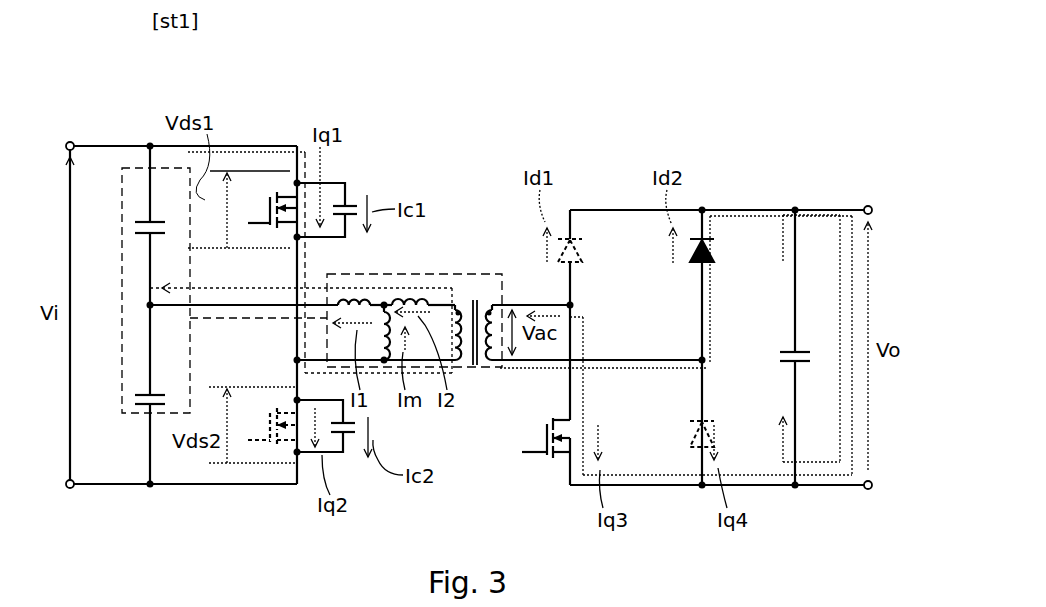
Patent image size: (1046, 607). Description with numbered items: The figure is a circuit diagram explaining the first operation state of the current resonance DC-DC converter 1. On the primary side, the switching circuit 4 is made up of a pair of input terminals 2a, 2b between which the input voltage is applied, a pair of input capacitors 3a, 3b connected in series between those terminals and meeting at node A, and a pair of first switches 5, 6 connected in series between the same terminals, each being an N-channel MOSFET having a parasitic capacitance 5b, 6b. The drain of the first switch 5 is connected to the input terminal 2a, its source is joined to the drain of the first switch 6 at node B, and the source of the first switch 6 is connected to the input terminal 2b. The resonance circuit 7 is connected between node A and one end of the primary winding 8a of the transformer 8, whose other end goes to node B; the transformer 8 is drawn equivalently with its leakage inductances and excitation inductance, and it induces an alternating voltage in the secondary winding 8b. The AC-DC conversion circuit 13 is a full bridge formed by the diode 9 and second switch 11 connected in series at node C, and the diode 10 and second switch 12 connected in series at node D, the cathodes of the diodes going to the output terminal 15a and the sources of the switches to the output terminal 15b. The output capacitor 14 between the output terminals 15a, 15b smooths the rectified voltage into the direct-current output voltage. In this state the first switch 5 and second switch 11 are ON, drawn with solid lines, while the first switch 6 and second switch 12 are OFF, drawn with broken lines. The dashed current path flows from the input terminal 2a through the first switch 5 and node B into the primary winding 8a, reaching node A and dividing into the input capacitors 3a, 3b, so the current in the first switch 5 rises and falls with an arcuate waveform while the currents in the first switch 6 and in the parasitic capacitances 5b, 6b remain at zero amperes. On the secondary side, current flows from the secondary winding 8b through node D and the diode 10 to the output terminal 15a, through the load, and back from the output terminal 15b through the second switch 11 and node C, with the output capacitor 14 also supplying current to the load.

The current resonance DC-DC converter 1 is at (457, 84).
The input terminal 2a is at (70, 141).
The input terminal 2b is at (70, 489).
The input capacitor 3a is at (158, 220).
The input capacitor 3b is at (158, 393).
The switching circuit 4 is at (234, 127).
The first switch 5 is at (270, 197).
The parasitic capacitance 5b is at (350, 205).
The first switch 6 is at (268, 419).
The parasitic capacitance 6b is at (333, 443).
The resonance circuit 7 is at (218, 287).
The transformer 8 is at (474, 281).
The primary winding 8a is at (455, 300).
The secondary winding 8b is at (492, 300).
The diode 9 is at (583, 258).
The diode 10 is at (716, 260).
The second switch 11 is at (545, 437).
The second switch 12 is at (690, 437).
The AC-DC conversion circuit 13 is at (625, 148).
The output capacitor 14 is at (800, 350).
The output terminal 15a is at (866, 205).
The output terminal 15b is at (867, 490).